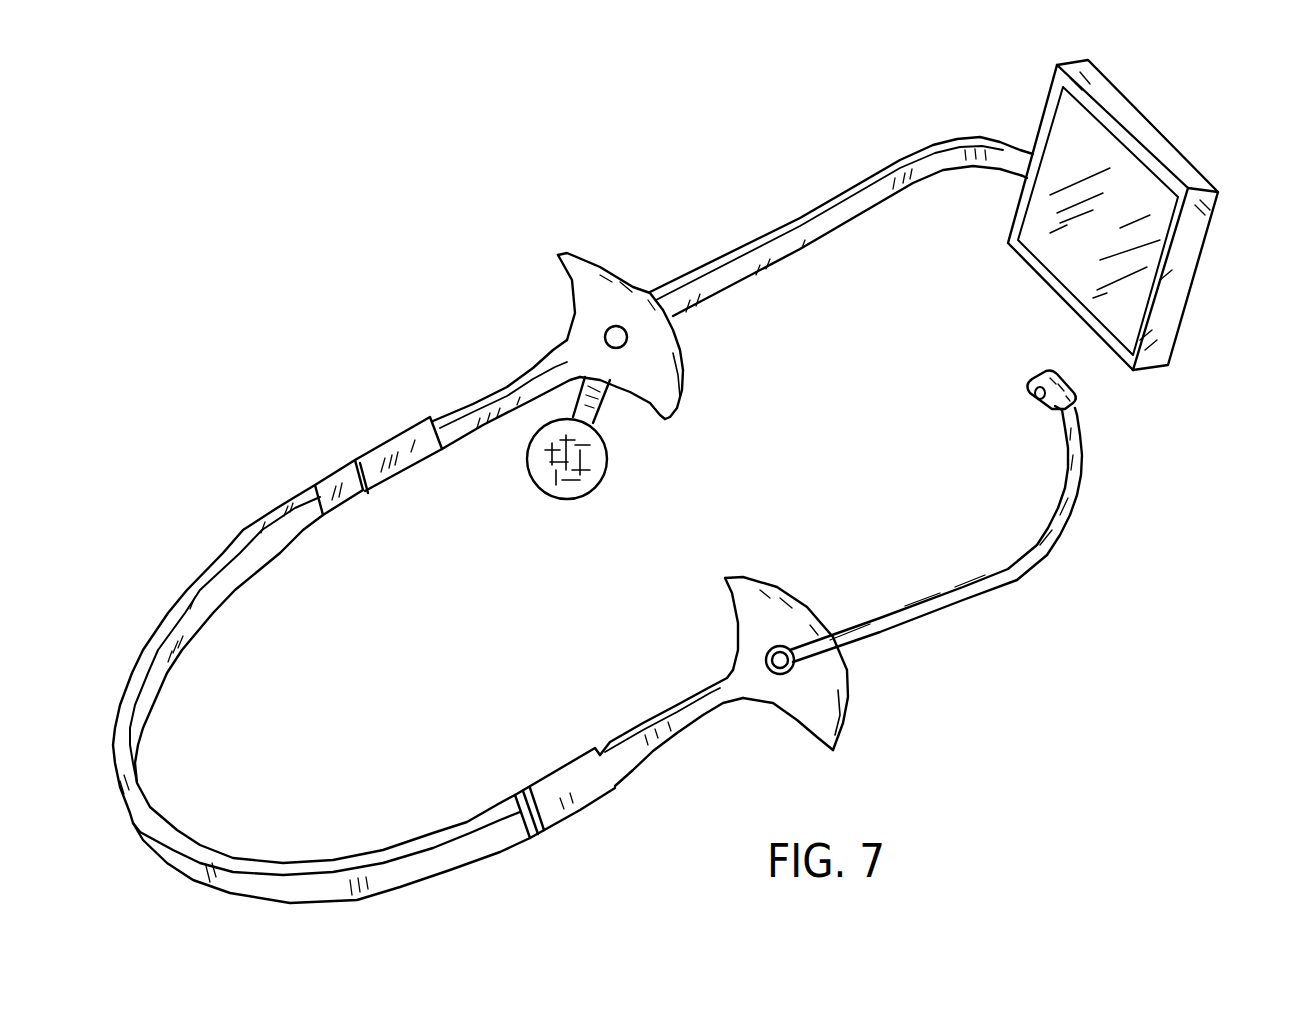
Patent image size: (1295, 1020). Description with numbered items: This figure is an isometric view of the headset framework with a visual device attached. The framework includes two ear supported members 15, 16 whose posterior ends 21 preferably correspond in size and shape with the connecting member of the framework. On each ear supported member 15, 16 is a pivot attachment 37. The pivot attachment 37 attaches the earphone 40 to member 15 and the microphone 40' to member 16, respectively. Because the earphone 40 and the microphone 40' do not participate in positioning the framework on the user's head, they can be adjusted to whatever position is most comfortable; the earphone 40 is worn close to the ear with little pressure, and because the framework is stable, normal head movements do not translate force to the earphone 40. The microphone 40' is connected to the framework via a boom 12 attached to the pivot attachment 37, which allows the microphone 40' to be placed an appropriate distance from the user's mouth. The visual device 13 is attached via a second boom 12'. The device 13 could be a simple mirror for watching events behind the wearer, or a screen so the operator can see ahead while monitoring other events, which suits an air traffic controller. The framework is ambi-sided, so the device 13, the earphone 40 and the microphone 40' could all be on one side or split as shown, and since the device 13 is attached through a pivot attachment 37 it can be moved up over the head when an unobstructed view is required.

The boom 12 is at (924, 540).
The second boom 12' is at (841, 199).
The visual device 13 is at (1135, 195).
The ear supported member 15 is at (562, 373).
The ear supported member 16 is at (573, 803).
The posterior end 21 is at (330, 480).
The pivot attachment 37 is at (627, 335).
The earphone 40 is at (628, 459).
The microphone 40' is at (984, 388).